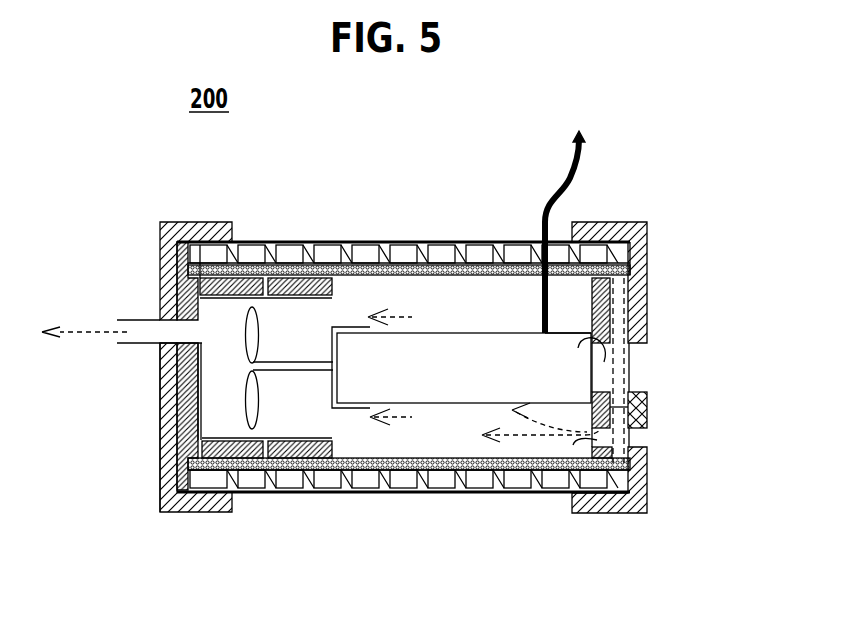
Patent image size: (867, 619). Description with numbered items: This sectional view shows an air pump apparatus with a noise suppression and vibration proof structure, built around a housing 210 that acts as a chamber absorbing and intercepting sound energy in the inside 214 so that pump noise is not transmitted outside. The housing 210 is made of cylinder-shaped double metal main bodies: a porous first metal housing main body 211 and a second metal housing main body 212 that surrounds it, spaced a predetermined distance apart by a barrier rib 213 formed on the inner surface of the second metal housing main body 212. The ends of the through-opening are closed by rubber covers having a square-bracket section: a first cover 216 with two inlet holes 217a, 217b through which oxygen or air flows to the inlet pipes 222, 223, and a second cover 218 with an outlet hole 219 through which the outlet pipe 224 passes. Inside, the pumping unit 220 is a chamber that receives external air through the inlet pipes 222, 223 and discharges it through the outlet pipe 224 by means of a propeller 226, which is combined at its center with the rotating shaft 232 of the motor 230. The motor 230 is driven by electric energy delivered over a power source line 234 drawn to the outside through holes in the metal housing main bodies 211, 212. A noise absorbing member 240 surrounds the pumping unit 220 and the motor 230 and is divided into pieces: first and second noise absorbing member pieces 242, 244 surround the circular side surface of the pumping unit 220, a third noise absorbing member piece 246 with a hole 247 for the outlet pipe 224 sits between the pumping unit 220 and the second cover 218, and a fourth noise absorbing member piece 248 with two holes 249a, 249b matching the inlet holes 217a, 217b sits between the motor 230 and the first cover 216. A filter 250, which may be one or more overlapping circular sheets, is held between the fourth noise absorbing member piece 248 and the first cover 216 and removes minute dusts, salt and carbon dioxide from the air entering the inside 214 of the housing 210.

The housing 210 is at (256, 241).
The first metal housing main body 211 is at (399, 248).
The second metal housing main body 212 is at (478, 248).
The barrier rib 213 is at (440, 248).
The inside of the housing 214 is at (472, 443).
The first cover 216 is at (638, 287).
The inlet hole 217a is at (638, 355).
The inlet hole 217b is at (638, 440).
The second cover 218 is at (181, 225).
The outlet hole 219 is at (160, 358).
The pumping unit 220 is at (184, 301).
The inlet pipe 222 is at (363, 243).
The inlet pipe 223 is at (397, 462).
The outlet pipe 224 is at (157, 332).
The propeller 226 is at (247, 402).
The motor 230 is at (561, 327).
The rotating shaft 232 is at (358, 420).
The power source line 234 is at (588, 140).
The noise absorbing member 240 is at (173, 431).
The first noise absorbing member piece 242 is at (318, 368).
The second noise absorbing member piece 244 is at (256, 462).
The third noise absorbing member piece 246 is at (200, 490).
The hole 247 is at (160, 377).
The fourth noise absorbing member piece 248 is at (610, 407).
The hole 249a is at (638, 333).
The hole 249b is at (573, 445).
The filter 250 is at (620, 373).